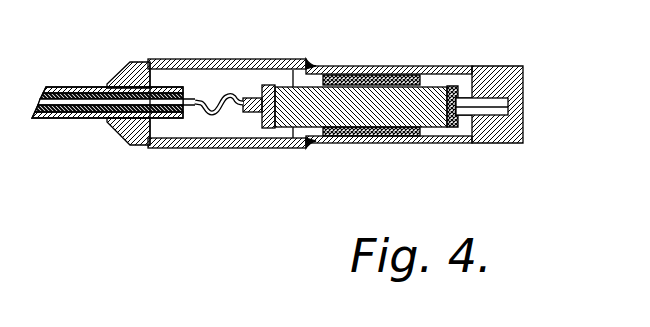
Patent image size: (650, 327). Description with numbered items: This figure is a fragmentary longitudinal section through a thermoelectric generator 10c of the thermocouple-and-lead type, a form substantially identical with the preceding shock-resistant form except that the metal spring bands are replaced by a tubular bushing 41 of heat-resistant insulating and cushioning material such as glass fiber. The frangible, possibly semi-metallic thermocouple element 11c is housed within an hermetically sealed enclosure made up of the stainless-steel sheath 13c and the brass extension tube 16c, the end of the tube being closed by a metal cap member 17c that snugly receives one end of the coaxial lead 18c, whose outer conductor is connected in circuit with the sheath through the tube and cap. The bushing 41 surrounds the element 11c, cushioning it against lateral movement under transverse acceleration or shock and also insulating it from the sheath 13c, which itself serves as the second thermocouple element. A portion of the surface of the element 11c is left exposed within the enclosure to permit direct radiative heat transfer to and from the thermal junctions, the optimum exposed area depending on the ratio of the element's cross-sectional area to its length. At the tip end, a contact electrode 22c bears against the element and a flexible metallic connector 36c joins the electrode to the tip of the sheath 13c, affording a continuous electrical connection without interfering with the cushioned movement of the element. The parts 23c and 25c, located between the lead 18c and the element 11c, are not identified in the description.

The thermoelectric generator 10c is at (184, 58).
The thermocouple element 11c is at (305, 85).
The sheath 13c is at (318, 144).
The extension tube 16c is at (208, 148).
The cap member 17c is at (127, 138).
The coaxial lead 18c is at (55, 121).
The contact electrode 22c is at (452, 125).
The contact stub 23c is at (252, 137).
The spring contact 25c is at (211, 110).
The flexible metallic connector 36c is at (490, 108).
The tubular bushing 41 is at (374, 85).